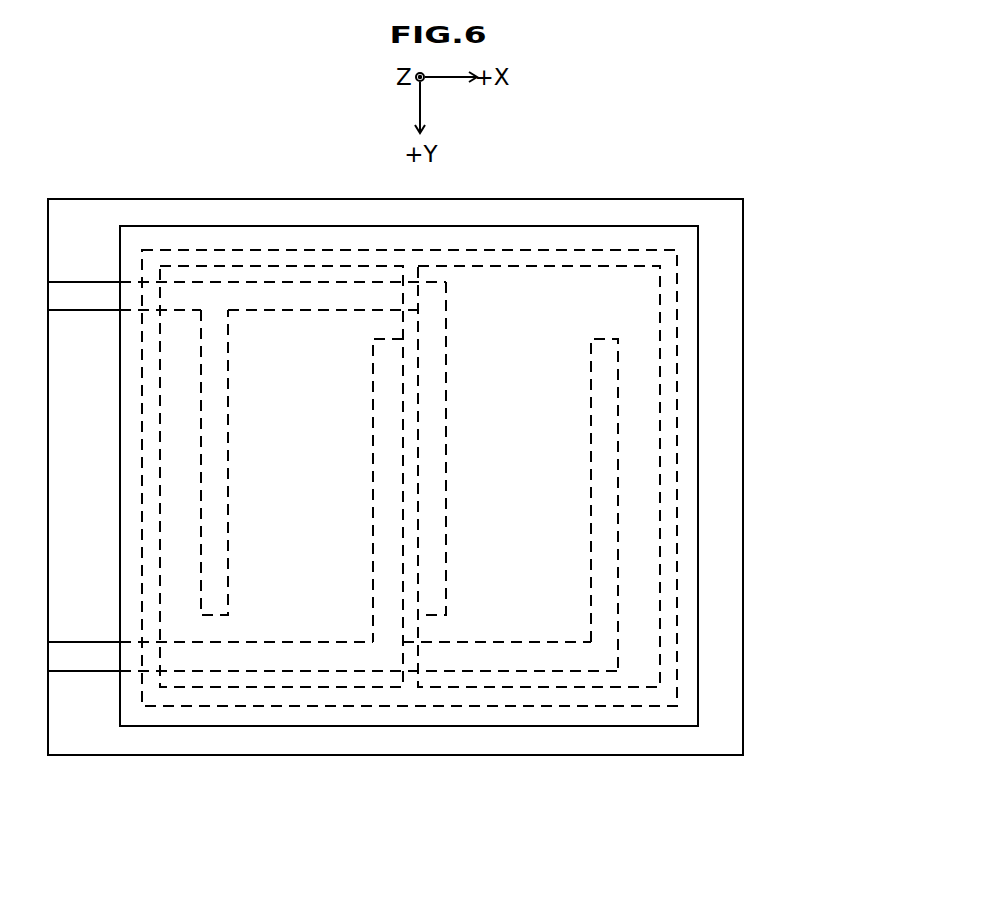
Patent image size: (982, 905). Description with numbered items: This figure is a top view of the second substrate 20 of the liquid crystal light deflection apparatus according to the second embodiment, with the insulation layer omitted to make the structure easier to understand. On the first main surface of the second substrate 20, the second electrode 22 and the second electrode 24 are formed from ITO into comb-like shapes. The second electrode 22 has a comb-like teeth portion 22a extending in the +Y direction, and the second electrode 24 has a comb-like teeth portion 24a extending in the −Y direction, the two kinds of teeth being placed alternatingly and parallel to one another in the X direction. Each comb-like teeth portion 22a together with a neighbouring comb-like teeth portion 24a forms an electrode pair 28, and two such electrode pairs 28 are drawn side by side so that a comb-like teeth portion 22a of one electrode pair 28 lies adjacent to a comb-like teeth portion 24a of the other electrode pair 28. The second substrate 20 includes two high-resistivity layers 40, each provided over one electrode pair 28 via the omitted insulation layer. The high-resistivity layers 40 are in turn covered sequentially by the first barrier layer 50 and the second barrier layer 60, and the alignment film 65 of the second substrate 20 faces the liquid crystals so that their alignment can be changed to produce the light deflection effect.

The second substrate 20 is at (743, 372).
The second electrode 22 is at (88, 672).
The comb-like teeth portion 22a is at (380, 337).
The second electrode 24 is at (83, 282).
The comb-like teeth portion 24a is at (230, 376).
The electrode pair 28 is at (409, 393).
The high-resistivity layer 40 is at (283, 688).
The first barrier layer 50 is at (677, 565).
The second barrier layer 60 is at (698, 627).
The alignment film 65 is at (701, 658).